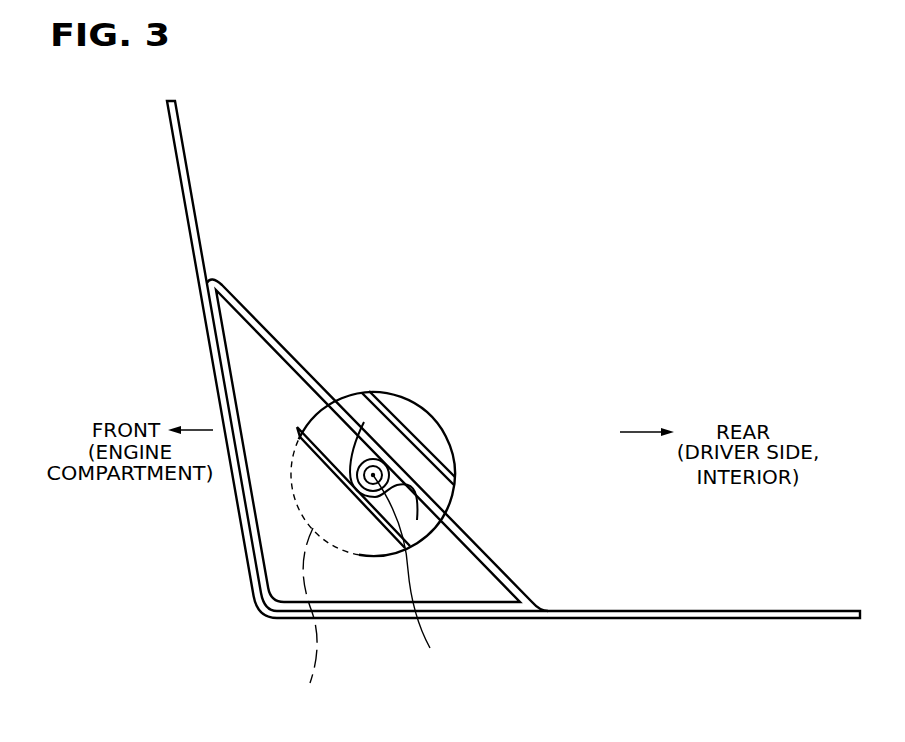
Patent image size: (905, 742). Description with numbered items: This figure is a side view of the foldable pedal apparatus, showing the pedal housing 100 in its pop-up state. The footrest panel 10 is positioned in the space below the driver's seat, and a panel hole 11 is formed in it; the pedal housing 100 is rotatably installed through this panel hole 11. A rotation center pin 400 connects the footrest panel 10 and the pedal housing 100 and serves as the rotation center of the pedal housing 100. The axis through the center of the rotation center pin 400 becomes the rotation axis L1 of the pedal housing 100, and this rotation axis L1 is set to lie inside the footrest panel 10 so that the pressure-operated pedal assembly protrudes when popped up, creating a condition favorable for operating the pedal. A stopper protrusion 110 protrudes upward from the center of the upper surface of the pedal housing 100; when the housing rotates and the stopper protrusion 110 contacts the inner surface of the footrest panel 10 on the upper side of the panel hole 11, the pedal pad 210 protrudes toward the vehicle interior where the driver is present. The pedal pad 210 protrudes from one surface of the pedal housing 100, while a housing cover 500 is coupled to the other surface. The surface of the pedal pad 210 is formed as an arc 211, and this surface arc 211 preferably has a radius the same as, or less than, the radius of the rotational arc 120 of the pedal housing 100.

The footrest panel 10 is at (278, 340).
The panel hole 11 is at (335, 400).
The pedal housing 100 is at (442, 492).
The stopper protrusion 110 is at (302, 426).
The rotational arc 120 is at (310, 617).
The pedal pad 210 is at (410, 414).
The surface arc 211 is at (436, 421).
The rotation center pin 400 is at (373, 475).
The housing cover 500 is at (370, 496).
The rotation axis L1 is at (407, 576).